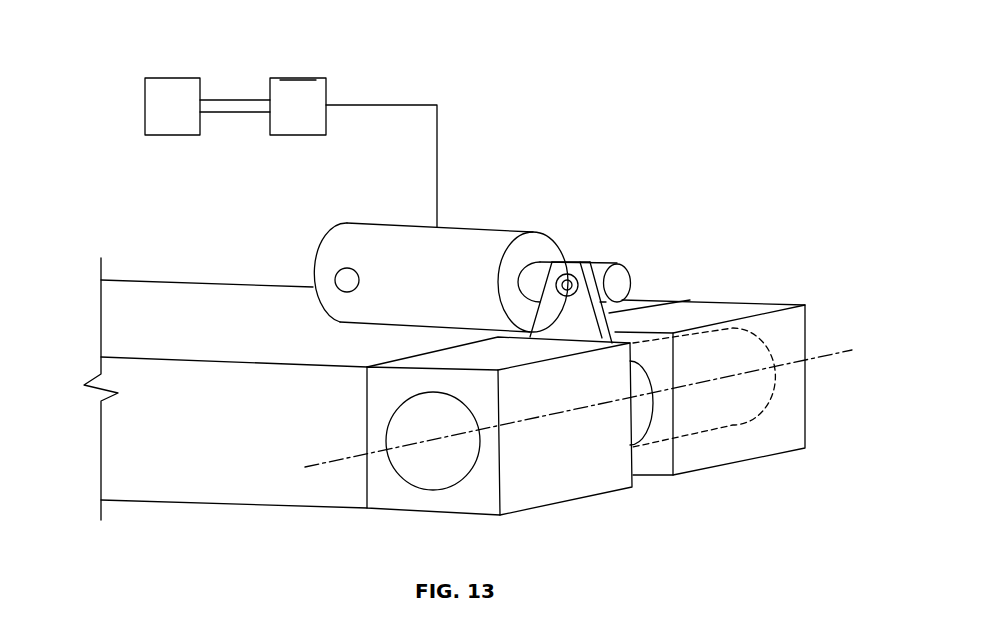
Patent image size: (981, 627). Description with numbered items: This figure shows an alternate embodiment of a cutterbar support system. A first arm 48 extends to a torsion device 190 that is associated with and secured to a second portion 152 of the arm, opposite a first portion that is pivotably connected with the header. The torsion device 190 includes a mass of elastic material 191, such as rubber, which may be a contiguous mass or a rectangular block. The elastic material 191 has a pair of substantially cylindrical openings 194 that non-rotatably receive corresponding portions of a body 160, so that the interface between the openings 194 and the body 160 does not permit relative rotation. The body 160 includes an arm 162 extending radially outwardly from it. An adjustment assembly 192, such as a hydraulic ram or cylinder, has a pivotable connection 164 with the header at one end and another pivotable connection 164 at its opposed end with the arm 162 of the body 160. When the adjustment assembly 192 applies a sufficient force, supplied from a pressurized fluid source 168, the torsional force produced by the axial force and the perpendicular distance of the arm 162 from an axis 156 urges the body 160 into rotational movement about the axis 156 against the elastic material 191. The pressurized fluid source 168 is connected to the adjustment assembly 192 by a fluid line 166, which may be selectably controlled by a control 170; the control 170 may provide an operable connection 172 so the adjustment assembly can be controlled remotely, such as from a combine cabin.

The torsion device 190 is at (141, 34).
The pressurized fluid source 168 is at (145, 107).
The control 170 is at (308, 78).
The operable connection 172 is at (285, 78).
The fluid line 166 is at (437, 167).
The first arm 48 is at (207, 280).
The second portion 152 is at (200, 502).
The elastic material 191 is at (578, 503).
The cylindrical openings 194 is at (415, 477).
The adjustment assembly 192 is at (490, 230).
The pivotable connection 164 is at (335, 278).
The arm 162 is at (609, 321).
The body 160 is at (706, 328).
The axis 156 is at (817, 357).